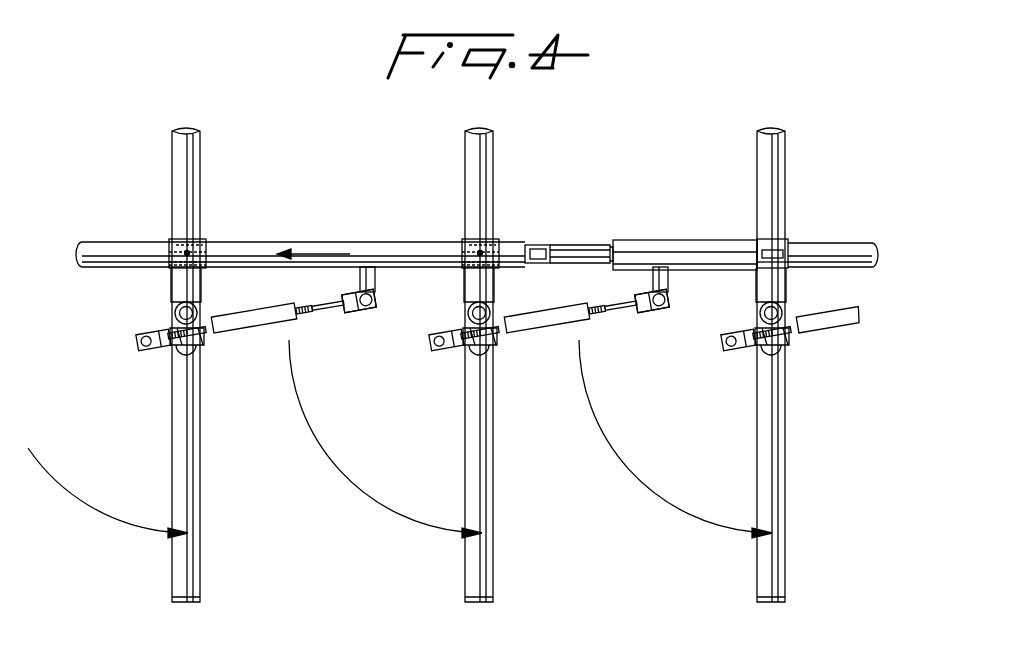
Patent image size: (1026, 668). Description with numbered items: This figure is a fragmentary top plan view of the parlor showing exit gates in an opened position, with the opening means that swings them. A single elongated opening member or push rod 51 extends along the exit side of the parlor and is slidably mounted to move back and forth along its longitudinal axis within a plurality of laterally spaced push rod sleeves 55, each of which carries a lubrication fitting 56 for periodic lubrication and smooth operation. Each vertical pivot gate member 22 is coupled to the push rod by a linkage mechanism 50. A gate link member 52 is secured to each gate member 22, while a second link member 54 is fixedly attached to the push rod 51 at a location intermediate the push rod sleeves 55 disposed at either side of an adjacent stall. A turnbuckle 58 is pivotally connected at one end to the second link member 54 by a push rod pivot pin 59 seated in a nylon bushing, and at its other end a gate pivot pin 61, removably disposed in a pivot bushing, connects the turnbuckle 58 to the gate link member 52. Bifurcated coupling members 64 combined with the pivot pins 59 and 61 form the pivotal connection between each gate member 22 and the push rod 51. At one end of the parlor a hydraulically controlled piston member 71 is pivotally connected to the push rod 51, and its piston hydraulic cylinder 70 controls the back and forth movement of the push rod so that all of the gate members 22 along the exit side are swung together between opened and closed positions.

The gate member 22 is at (201, 560).
The linkage mechanism 50 is at (242, 346).
The push rod 51 is at (413, 245).
The gate link member 52 is at (175, 355).
The second link member 54 is at (376, 276).
The push rod sleeve 55 is at (190, 252).
The lubrication fitting 56 is at (183, 250).
The turnbuckle 58 is at (258, 318).
The push rod pivot pin 59 is at (374, 300).
The gate pivot pin 61 is at (138, 338).
The bifurcated coupling member 64 is at (158, 333).
The piston hydraulic cylinder 70 is at (684, 250).
The piston member 71 is at (578, 248).